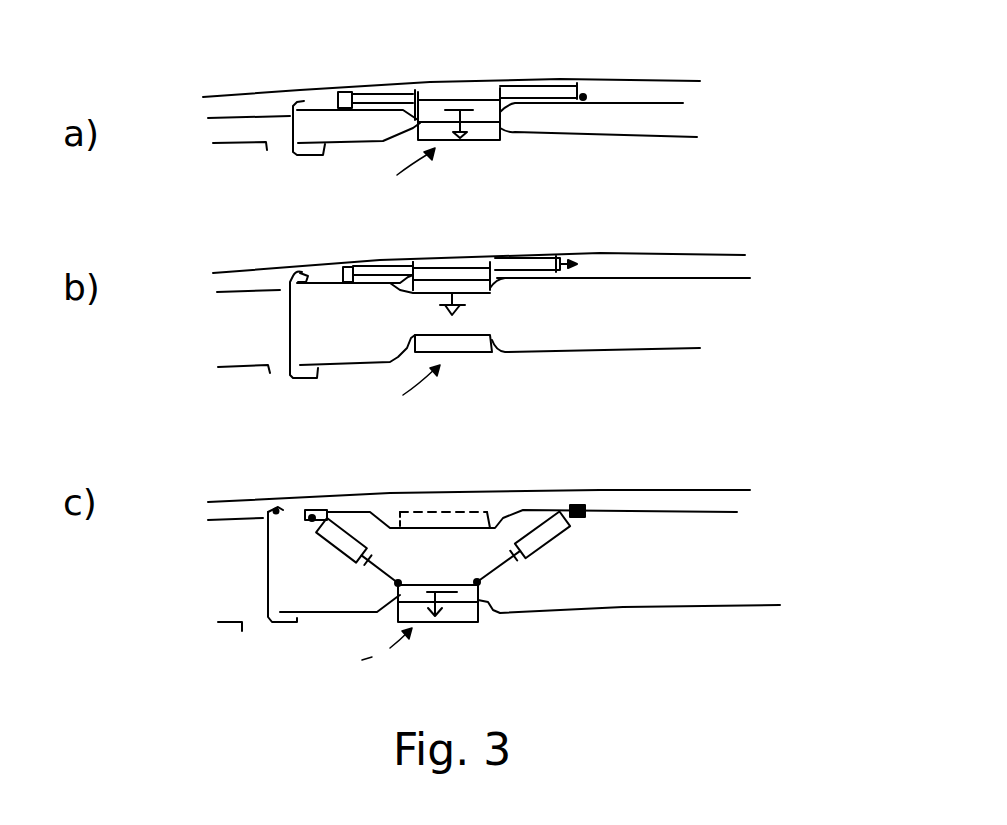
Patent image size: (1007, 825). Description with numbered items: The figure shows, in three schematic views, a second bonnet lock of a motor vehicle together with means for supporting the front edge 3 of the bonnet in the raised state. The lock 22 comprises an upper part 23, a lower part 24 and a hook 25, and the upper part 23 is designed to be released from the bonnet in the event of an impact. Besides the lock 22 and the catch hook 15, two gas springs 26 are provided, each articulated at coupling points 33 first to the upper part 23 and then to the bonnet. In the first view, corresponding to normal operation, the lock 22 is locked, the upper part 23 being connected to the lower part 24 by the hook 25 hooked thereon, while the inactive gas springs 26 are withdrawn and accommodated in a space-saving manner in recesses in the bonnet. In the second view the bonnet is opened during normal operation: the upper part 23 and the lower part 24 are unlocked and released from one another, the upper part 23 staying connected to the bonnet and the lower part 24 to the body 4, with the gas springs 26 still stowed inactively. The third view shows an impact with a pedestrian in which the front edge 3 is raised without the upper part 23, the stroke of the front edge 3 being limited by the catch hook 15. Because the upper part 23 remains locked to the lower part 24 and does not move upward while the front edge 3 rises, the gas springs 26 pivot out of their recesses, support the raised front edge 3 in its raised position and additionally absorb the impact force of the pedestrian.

The front edge 3 is at (247, 82).
The body 4 is at (665, 133).
The catch hook 15 is at (290, 133).
The lock 22 is at (386, 414).
The upper part 23 is at (432, 107).
The lower part 24 is at (487, 132).
The hook 25 is at (458, 137).
The gas springs 26 is at (547, 75).
The coupling points 33 is at (335, 98).